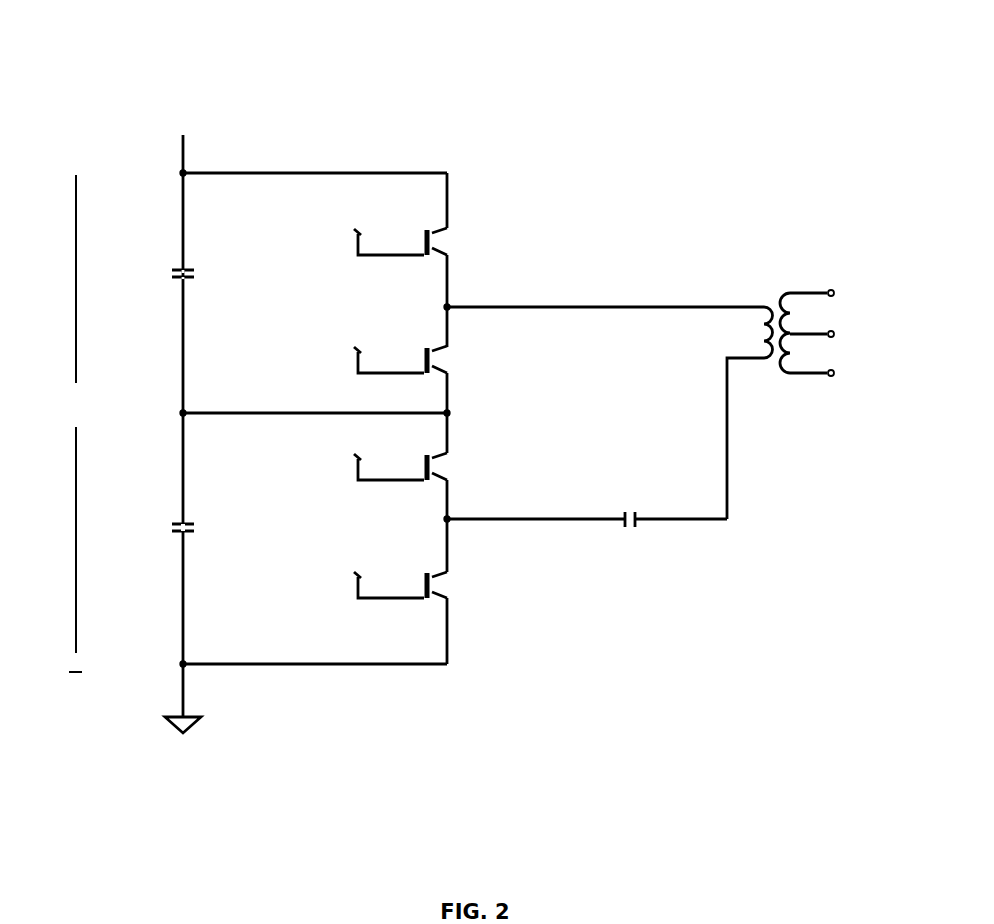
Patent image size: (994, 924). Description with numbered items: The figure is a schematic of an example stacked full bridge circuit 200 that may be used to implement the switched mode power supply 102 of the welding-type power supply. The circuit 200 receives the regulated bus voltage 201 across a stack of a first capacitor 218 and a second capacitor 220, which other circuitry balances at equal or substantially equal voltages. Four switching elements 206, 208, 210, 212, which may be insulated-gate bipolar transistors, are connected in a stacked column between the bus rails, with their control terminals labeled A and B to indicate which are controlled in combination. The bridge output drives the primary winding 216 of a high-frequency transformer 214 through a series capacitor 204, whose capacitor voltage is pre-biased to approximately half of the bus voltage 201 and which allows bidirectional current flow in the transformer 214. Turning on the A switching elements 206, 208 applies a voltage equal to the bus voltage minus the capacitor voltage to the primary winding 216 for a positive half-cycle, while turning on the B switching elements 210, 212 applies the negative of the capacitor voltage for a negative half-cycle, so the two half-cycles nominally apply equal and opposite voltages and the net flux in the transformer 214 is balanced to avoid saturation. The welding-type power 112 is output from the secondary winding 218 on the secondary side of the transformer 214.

The switched mode power supply 102 is at (92, 38).
The stacked full bridge circuit 200 is at (130, 130).
The bus voltage 201 is at (317, 173).
The series capacitor 204 is at (623, 513).
The switching element 206 is at (447, 253).
The switching element 208 is at (447, 593).
The switching element 210 is at (447, 371).
The switching element 212 is at (447, 475).
The high-frequency transformer 214 is at (740, 228).
The primary winding 216 is at (763, 307).
The secondary winding / first capacitor 218 is at (177, 272).
The second capacitor 220 is at (177, 528).
The welding-type power 112 is at (873, 332).